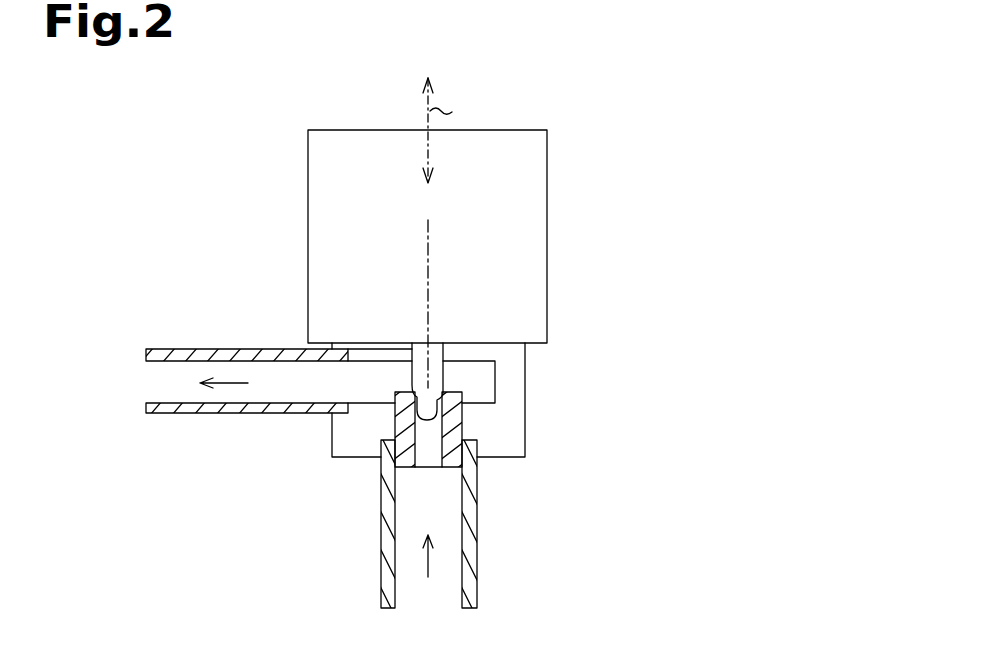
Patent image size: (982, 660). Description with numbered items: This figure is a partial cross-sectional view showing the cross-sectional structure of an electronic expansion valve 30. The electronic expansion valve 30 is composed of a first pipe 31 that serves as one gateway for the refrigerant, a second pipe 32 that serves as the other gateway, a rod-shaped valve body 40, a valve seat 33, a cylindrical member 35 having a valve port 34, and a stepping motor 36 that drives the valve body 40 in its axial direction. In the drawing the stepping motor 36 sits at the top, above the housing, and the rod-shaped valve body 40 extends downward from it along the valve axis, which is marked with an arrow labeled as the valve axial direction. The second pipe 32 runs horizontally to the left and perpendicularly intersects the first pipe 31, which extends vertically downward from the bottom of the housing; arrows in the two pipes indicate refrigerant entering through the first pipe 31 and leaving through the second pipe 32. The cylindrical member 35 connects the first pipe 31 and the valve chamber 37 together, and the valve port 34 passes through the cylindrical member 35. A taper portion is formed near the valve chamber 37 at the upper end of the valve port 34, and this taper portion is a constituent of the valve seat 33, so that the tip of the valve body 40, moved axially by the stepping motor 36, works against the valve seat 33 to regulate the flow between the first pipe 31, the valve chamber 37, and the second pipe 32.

The electronic expansion valve 30 is at (226, 238).
The first pipe 31 is at (478, 590).
The second pipe 32 is at (196, 414).
The valve seat 33 is at (442, 382).
The valve port 34 is at (432, 450).
The cylindrical member 35 is at (394, 420).
The stepping motor 36 is at (548, 298).
The valve chamber 37 is at (376, 387).
The valve body 40 is at (436, 388).